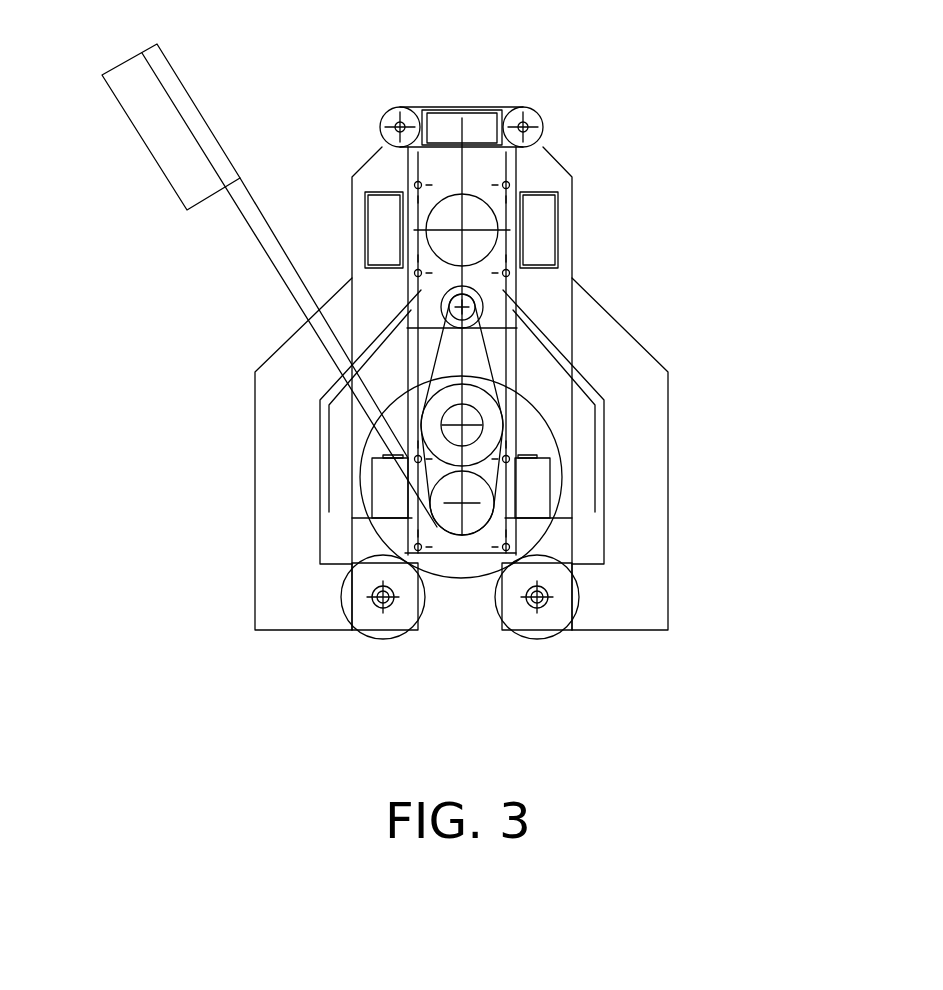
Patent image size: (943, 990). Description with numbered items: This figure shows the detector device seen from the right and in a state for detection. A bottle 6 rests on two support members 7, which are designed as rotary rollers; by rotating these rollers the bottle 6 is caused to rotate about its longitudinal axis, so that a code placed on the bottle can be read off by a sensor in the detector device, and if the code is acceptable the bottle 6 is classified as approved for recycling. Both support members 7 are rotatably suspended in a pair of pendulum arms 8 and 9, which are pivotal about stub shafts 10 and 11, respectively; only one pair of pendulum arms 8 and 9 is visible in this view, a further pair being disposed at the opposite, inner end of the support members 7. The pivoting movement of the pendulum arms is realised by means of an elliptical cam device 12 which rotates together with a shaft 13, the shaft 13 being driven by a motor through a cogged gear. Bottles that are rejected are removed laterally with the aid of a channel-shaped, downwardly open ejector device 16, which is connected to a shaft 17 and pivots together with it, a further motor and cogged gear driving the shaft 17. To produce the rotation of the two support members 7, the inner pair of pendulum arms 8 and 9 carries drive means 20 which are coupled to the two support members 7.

The bottle 6 is at (373, 445).
The support members 7 is at (382, 639).
The pendulum arm 8 is at (273, 519).
The pendulum arm 9 is at (640, 547).
The stub shaft 10 is at (395, 127).
The stub shaft 11 is at (528, 127).
The elliptical cam device 12 is at (475, 360).
The shaft 13 is at (470, 417).
The ejector device 16 is at (332, 452).
The shaft 17 is at (476, 302).
The drive means 20 is at (530, 485).